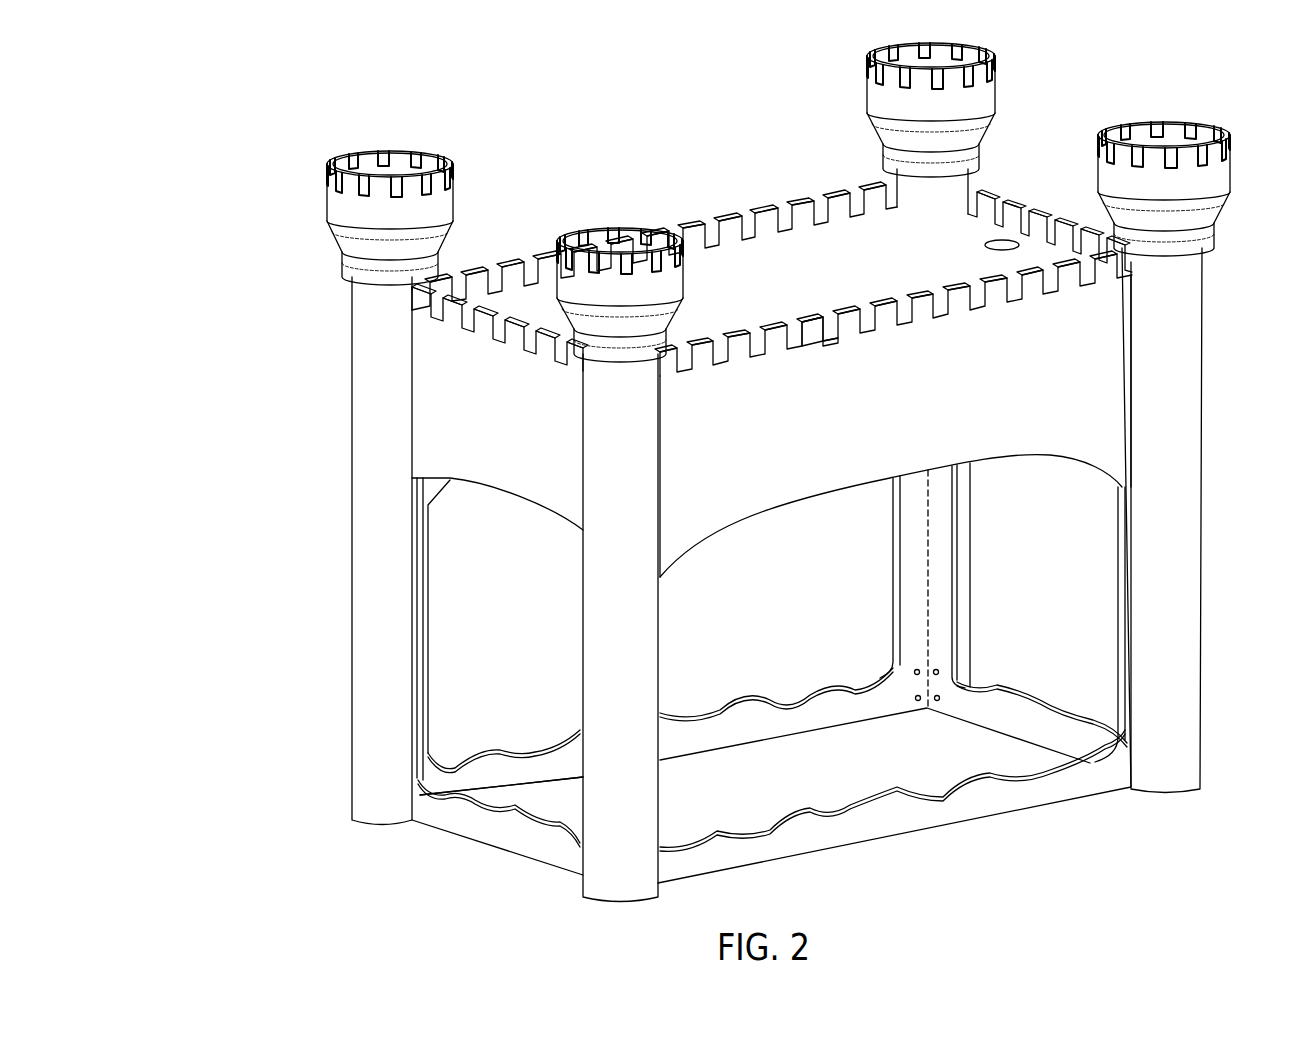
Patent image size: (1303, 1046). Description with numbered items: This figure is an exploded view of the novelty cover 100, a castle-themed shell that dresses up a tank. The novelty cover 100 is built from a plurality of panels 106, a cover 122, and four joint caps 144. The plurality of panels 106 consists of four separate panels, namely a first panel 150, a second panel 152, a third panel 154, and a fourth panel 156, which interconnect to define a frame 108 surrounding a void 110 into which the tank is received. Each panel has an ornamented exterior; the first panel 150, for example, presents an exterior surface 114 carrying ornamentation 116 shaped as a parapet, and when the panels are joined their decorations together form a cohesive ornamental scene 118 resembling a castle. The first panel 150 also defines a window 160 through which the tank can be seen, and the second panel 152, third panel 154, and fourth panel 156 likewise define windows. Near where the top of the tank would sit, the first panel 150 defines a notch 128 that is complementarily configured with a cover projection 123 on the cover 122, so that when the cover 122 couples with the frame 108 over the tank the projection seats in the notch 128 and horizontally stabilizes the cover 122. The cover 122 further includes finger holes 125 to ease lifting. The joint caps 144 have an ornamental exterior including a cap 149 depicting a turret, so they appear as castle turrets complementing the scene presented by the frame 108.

The novelty cover 100 is at (241, 119).
The plurality of panels 106 is at (1047, 415).
The frame 108 is at (527, 242).
The void 110 is at (1009, 622).
The exterior surface 114 is at (700, 445).
The ornamentation 116 is at (792, 371).
The cohesive ornamental scene 118 is at (709, 187).
The cover 122 is at (818, 268).
The cover projection 123 is at (808, 352).
The finger holes 125 is at (1000, 243).
The notch 128 is at (800, 325).
The joint caps 144 is at (366, 318).
The cap 149 is at (345, 214).
The first panel 150 is at (825, 420).
The second panel 152 is at (484, 425).
The third panel 154 is at (755, 725).
The fourth panel 156 is at (985, 708).
The window 160 is at (745, 517).